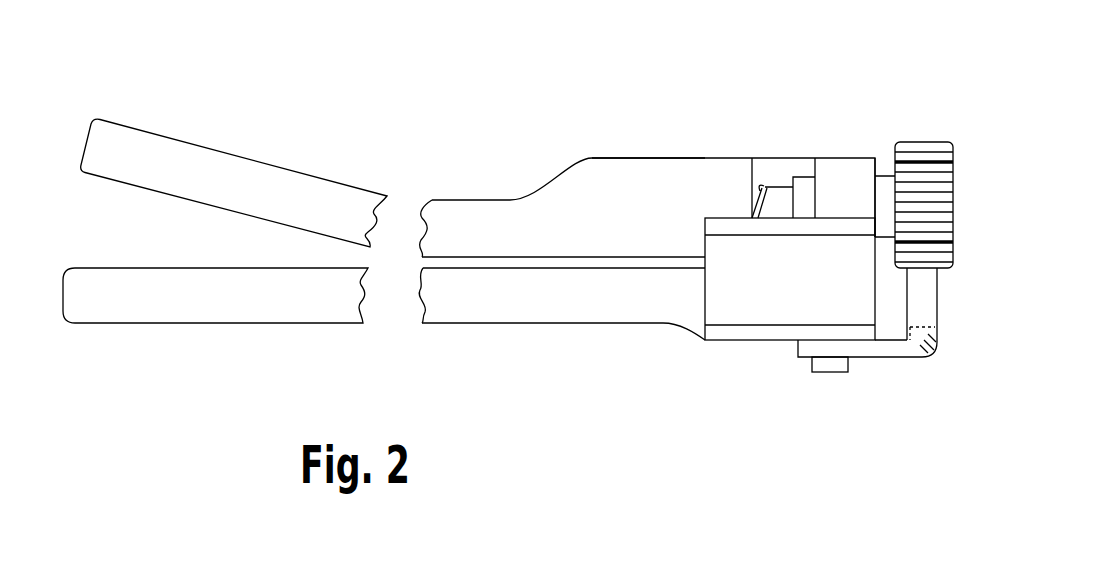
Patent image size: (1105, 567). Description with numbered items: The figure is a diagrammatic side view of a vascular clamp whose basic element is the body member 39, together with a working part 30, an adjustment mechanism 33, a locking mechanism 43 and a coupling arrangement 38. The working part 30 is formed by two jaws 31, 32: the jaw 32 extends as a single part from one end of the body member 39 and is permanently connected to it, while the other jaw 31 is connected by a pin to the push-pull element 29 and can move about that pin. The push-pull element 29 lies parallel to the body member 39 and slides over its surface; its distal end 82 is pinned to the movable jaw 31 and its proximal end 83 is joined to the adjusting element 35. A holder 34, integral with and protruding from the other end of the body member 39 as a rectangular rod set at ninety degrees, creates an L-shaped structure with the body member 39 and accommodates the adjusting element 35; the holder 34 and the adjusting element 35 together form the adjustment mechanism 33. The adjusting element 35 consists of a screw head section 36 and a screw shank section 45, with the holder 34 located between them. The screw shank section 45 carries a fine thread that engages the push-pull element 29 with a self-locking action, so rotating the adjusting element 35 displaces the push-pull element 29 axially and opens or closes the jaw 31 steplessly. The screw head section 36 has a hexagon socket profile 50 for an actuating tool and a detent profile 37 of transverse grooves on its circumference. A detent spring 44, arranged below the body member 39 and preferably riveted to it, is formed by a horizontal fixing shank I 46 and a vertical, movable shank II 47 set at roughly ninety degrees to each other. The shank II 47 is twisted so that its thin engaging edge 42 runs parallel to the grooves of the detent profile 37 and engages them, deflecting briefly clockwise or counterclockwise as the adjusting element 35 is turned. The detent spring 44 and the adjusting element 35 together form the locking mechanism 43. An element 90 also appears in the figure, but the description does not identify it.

The push-pull element 29 is at (510, 217).
The working part 30 is at (272, 100).
The jaw 31 is at (158, 160).
The jaw 32 is at (137, 308).
The adjustment mechanism 33 is at (861, 123).
The holder 34 is at (840, 177).
The adjusting element 35 is at (922, 150).
The screw head section 36 is at (933, 247).
The detent profile 37 is at (942, 173).
The coupling arrangement 38 is at (767, 367).
The body member 39 is at (527, 307).
The engaging edge 42 is at (922, 270).
The locking mechanism 43 is at (921, 392).
The detent spring 44 is at (928, 318).
The screw shank section 45 is at (775, 187).
The shank I 46 is at (863, 350).
The vertical shank II 47 is at (923, 303).
The hexagon socket profile 50 is at (972, 203).
The distal end 82 is at (443, 215).
The proximal end 83 is at (697, 170).
The engagement element 90 is at (922, 355).